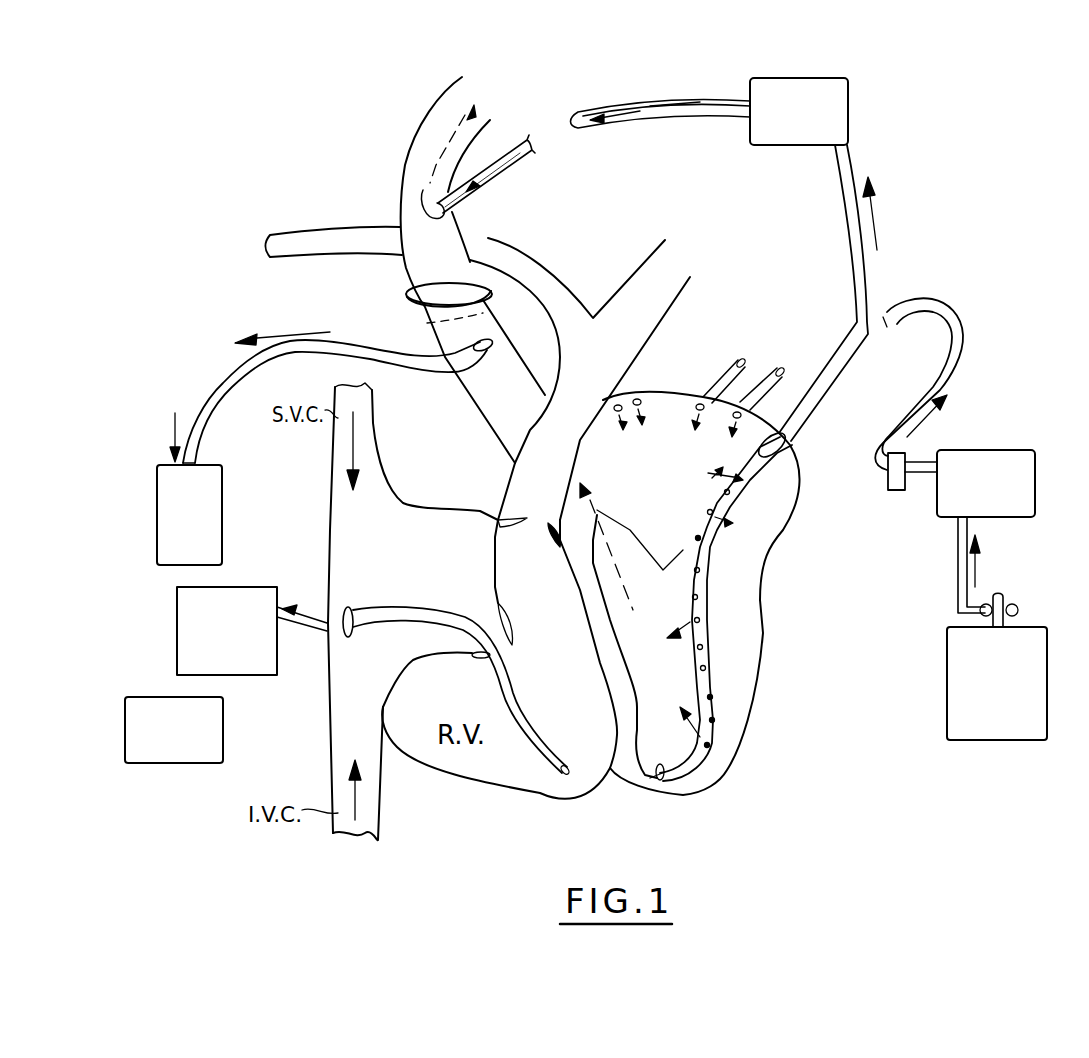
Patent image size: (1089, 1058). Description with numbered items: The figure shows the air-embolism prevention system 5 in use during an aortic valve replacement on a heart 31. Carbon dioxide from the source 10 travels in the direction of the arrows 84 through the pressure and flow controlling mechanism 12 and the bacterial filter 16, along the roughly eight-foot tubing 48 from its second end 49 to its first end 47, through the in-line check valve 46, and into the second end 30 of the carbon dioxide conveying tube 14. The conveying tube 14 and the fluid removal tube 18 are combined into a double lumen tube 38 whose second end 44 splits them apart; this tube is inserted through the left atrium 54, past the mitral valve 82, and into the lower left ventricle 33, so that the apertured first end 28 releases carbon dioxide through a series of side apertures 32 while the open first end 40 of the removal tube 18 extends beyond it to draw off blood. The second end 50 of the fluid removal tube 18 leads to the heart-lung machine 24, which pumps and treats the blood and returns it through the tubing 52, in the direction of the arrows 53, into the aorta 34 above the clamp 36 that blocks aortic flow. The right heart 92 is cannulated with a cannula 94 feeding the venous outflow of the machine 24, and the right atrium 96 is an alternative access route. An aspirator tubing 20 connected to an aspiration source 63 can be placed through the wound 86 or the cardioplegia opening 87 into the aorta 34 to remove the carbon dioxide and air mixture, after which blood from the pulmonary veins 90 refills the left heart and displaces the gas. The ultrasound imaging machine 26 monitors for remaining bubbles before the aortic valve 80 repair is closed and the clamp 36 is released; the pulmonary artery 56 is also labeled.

The system 5 is at (947, 217).
The carbon dioxide source 10 is at (1010, 731).
The pressure and flow controlling mechanism 12 is at (997, 501).
The carbon dioxide conveying tube 14 is at (963, 307).
The bacterial filter 16 is at (907, 490).
The fluid removal tube 18 is at (845, 180).
The aspirator tubing 20 is at (208, 392).
The heart-lung machine 24 is at (810, 128).
The ultrasound imaging machine 26 is at (190, 750).
The first end of carbon dioxide conveying tube 28 is at (713, 757).
The second end of carbon dioxide conveying tube 30 is at (886, 476).
The heart 31 is at (728, 805).
The apertures 32 is at (703, 647).
The left ventricle 33 is at (757, 627).
The aorta 34 is at (420, 143).
The clamp 36 is at (407, 297).
The double lumen tube 38 is at (707, 662).
The first end of fluid removal tube 40 is at (668, 773).
The second end of double lumen tube 44 is at (855, 338).
The check valve 46 is at (883, 317).
The first end of tubing 47 is at (898, 325).
The tubing 48 is at (967, 343).
The second end of tubing 49 is at (872, 458).
The second end of fluid removal tube 50 is at (835, 158).
The tubing 52 is at (740, 105).
The arrows 53 is at (500, 173).
The left atrium 54 is at (800, 510).
The pulmonary artery 56 is at (613, 322).
The aspiration source 63 is at (203, 535).
The aortic valve 80 is at (630, 528).
The mitral valve 82 is at (713, 537).
The arrows 84 is at (831, 580).
The wound 86 is at (420, 325).
The cardioplegia wound 87 is at (493, 347).
The pulmonary veins 90 is at (750, 377).
The right heart 92 is at (410, 727).
The cannula 94 is at (543, 753).
The right atrium 96 is at (343, 557).